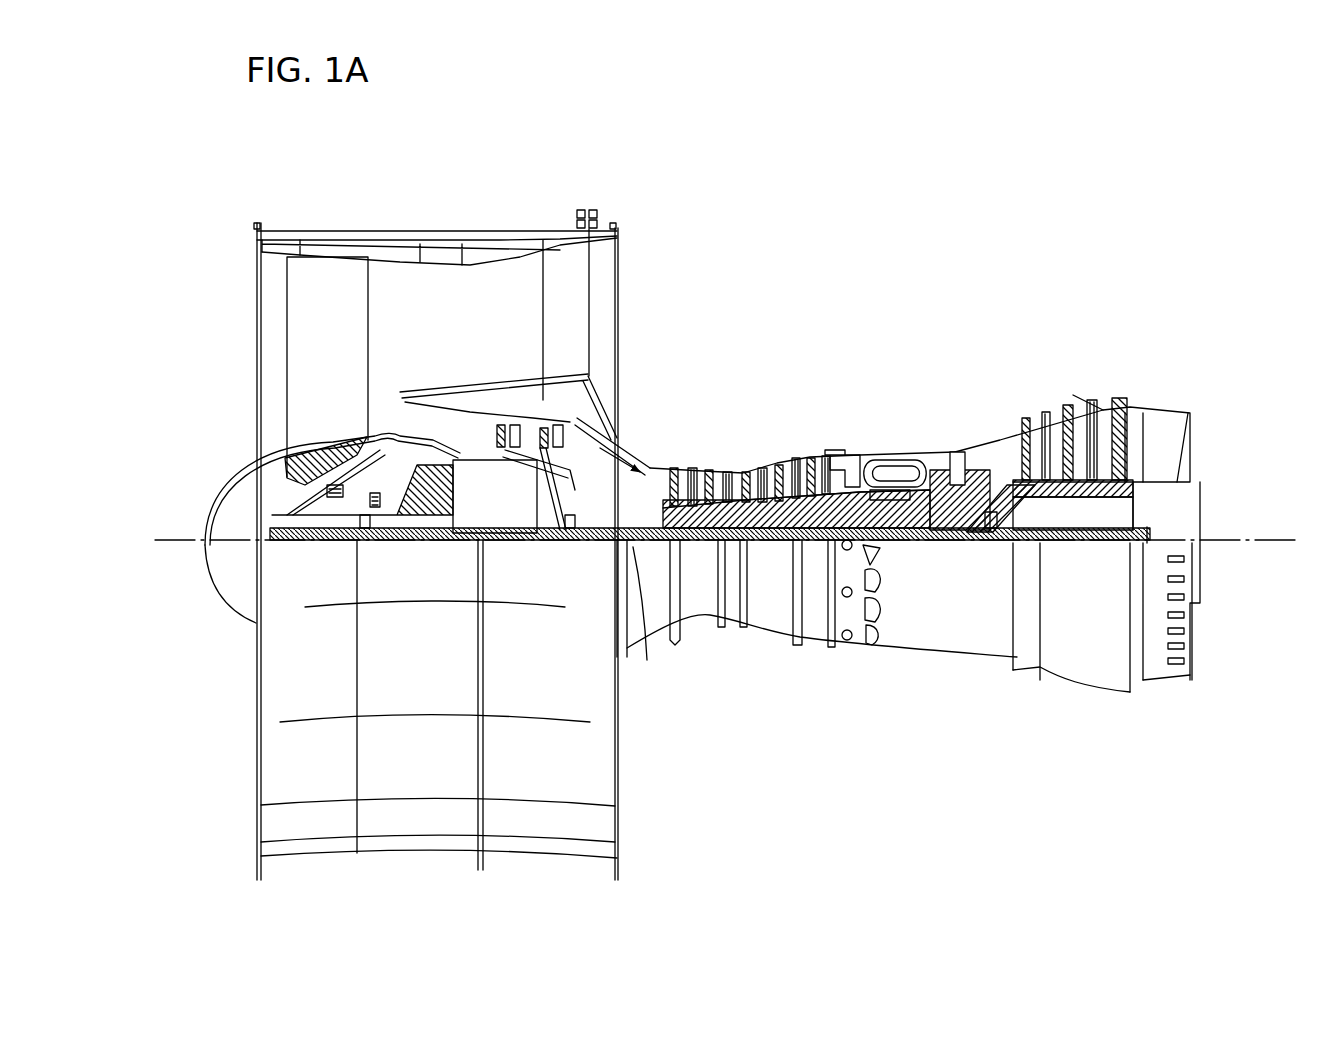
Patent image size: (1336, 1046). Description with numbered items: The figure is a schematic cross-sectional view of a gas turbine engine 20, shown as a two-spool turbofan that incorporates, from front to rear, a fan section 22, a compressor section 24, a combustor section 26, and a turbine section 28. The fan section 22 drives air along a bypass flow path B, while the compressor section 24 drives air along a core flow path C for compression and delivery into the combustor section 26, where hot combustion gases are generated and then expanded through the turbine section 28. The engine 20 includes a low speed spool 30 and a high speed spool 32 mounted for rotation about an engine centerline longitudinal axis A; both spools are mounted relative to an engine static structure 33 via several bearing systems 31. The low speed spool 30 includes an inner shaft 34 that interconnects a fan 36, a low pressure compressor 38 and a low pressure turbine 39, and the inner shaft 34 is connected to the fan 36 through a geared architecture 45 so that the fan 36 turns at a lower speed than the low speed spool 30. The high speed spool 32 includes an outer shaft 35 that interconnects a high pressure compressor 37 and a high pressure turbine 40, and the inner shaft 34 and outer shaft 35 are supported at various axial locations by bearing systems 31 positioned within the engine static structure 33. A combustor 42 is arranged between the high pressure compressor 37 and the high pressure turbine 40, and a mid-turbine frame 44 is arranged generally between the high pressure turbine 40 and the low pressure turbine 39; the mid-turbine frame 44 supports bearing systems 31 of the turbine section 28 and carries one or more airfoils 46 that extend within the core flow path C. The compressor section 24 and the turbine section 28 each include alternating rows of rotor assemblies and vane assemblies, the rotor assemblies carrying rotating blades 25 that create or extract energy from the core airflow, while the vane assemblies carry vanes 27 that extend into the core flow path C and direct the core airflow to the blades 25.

The gas turbine engine 20 is at (895, 284).
The fan section 22 is at (362, 223).
The compressor section 24 is at (665, 440).
The blades 25 is at (503, 437).
The combustor section 26 is at (888, 425).
The vanes 27 is at (520, 430).
The turbine section 28 is at (1035, 392).
The low speed spool 30 is at (772, 550).
The bearing systems 31 is at (363, 542).
The high speed spool 32 is at (822, 460).
The engine static structure 33 is at (812, 642).
The inner shaft 34 is at (635, 545).
The outer shaft 35 is at (896, 542).
The fan 36 is at (340, 370).
The high pressure compressor 37 is at (747, 475).
The low pressure compressor 38 is at (586, 382).
The low pressure turbine 39 is at (1077, 402).
The high pressure turbine 40 is at (960, 463).
The combustor 42 is at (895, 468).
The mid-turbine frame 44 is at (995, 445).
The geared architecture 45 is at (440, 542).
The airfoils 46 is at (1030, 507).
The engine centerline longitudinal axis A is at (1283, 540).
The bypass flow path B is at (400, 316).
The core flow path C is at (635, 438).